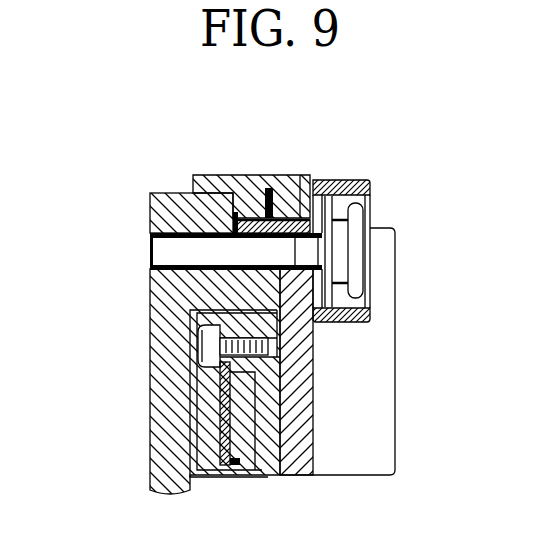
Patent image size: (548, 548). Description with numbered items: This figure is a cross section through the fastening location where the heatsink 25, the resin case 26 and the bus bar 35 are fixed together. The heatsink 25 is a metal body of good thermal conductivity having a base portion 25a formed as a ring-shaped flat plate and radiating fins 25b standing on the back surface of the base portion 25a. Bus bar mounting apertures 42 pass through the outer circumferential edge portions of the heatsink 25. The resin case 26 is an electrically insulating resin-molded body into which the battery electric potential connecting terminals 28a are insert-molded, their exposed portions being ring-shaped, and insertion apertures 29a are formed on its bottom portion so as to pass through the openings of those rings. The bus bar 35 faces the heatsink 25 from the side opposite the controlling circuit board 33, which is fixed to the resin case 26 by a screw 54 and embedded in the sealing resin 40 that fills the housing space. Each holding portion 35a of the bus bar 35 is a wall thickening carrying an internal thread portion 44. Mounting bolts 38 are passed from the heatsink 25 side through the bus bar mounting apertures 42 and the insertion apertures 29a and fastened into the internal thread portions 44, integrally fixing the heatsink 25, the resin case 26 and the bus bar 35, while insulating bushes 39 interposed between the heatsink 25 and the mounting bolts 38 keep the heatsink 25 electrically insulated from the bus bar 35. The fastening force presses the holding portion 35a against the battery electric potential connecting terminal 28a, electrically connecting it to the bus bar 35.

The heatsink 25 is at (312, 481).
The base portion 25a is at (302, 423).
The radiating fins 25b is at (380, 373).
The resin case 26 is at (259, 473).
The battery electric potential connecting terminals 28a is at (264, 213).
The insertion apertures 29a is at (240, 213).
The controlling circuit board 33 is at (222, 394).
The bus bar 35 is at (148, 312).
The holding portion 35a is at (152, 196).
The mounting bolts 38 is at (358, 249).
The insulating bushes 39 is at (355, 183).
The sealing resin 40 is at (213, 433).
The bus bar mounting apertures 42 is at (301, 213).
The internal thread portions 44 is at (197, 228).
The screw 54 is at (200, 348).